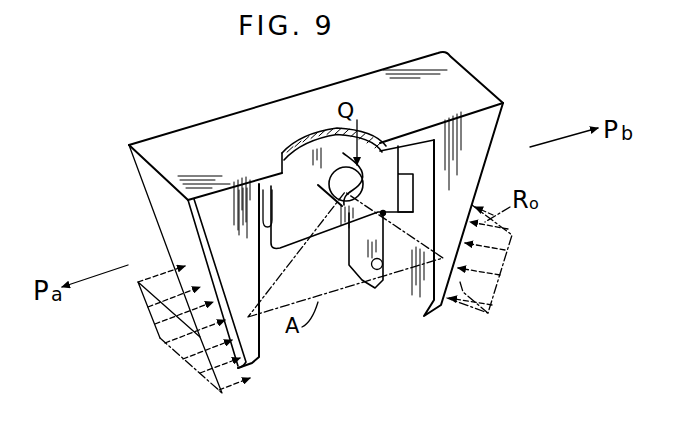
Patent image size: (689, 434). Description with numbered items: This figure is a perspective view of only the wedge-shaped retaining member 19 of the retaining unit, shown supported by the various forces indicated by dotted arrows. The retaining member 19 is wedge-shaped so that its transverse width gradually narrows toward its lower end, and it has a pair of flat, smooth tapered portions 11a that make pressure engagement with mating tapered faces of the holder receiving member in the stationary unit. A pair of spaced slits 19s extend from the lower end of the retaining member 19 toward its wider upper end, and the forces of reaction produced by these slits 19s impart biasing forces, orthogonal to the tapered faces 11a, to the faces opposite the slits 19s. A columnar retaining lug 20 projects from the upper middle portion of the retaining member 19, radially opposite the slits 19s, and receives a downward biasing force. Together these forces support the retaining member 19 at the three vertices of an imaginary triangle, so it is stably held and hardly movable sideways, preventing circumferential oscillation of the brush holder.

The tapered portions 11a is at (163, 208).
The wedge-shaped retaining member 19 is at (483, 130).
The slits 19s is at (393, 257).
The retaining lug 20 is at (334, 167).